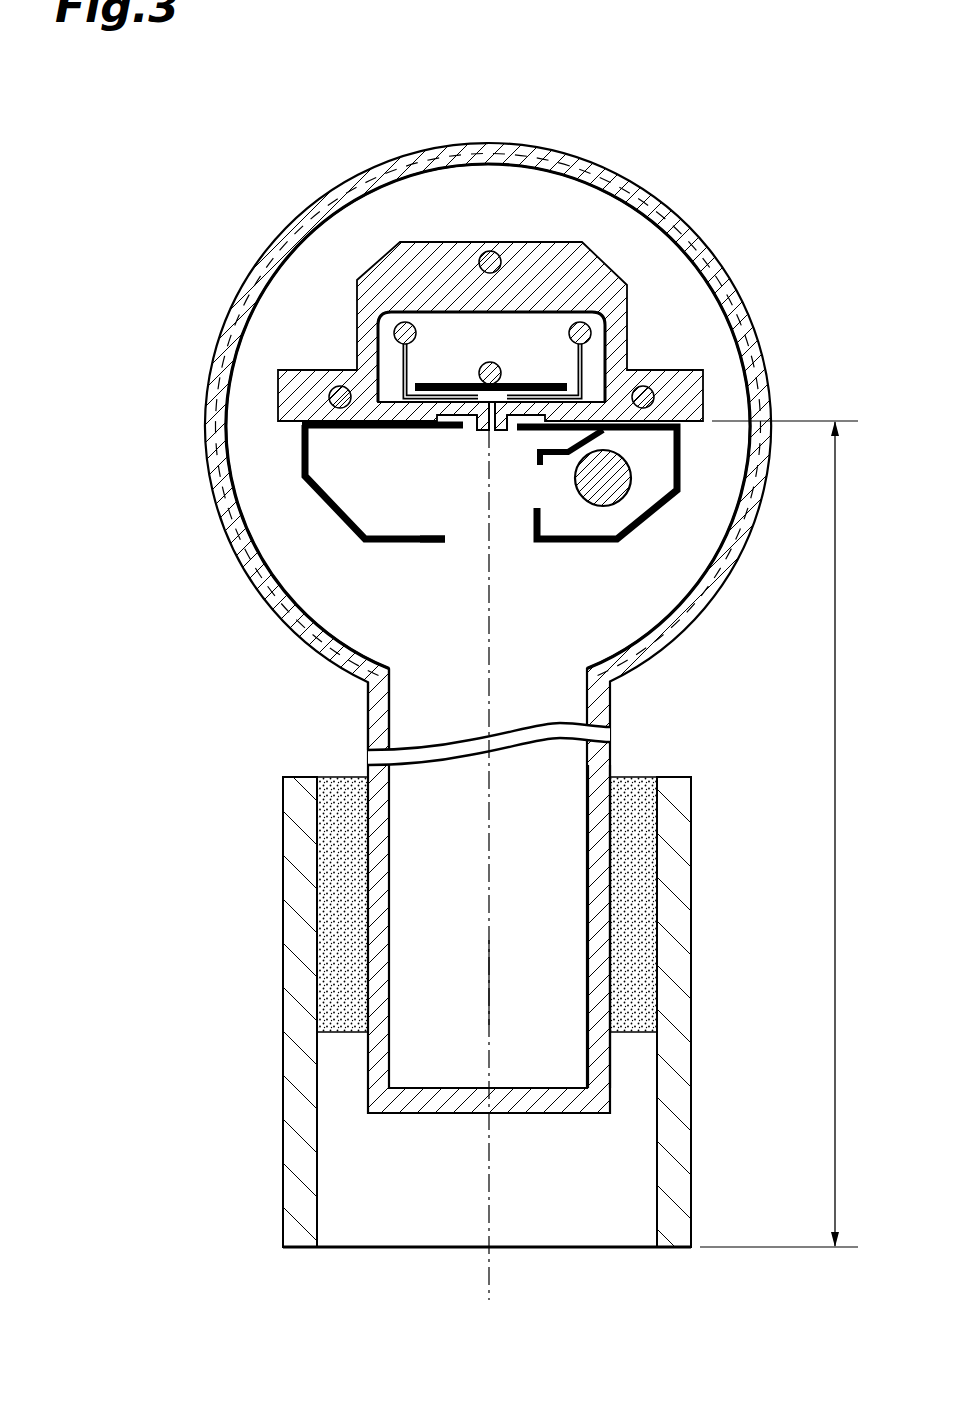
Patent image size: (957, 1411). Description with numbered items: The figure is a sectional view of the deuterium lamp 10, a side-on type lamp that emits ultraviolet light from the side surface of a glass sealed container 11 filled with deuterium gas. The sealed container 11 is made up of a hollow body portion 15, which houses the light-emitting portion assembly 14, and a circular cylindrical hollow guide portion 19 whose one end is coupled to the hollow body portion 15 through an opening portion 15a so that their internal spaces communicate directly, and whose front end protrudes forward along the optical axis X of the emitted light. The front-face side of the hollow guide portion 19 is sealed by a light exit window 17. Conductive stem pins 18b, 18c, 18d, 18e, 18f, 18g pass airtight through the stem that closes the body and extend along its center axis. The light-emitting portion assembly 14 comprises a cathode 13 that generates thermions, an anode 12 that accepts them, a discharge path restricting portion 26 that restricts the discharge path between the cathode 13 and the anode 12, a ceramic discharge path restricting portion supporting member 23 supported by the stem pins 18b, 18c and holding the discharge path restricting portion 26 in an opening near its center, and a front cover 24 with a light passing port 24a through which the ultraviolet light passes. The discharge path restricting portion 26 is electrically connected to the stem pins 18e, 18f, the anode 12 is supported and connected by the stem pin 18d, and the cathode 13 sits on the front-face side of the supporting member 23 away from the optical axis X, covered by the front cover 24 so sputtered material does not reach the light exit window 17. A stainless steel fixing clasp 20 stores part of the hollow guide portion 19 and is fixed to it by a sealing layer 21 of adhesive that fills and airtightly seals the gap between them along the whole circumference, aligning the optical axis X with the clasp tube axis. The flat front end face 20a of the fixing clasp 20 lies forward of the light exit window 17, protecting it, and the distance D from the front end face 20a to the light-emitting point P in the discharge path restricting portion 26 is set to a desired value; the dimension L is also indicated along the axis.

The deuterium lamp 10 is at (278, 126).
The sealed container 11 is at (278, 186).
The hollow body portion 15 is at (262, 262).
The opening portion 15a is at (390, 666).
The light-emitting portion assembly 14 is at (338, 321).
The stem pin 18b is at (338, 400).
The stem pin 18c is at (680, 425).
The stem pin 18d is at (489, 362).
The stem pin 18e is at (403, 323).
The stem pin 18f is at (581, 322).
The stem pin 18g is at (492, 251).
The anode 12 is at (545, 382).
The discharge path restricting portion supporting member 23 is at (688, 370).
The discharge path restricting portion 26 is at (480, 416).
The light-emitting point P is at (492, 430).
The front cover 24 is at (350, 525).
The light passing port 24a is at (445, 545).
The cathode 13 is at (617, 492).
The hollow guide portion 19 is at (608, 768).
The light exit window 17 is at (428, 1105).
The fixing clasp 20 is at (680, 907).
The front end face 20a is at (582, 1250).
The sealing layer 21 is at (643, 840).
The optical axis X is at (490, 940).
The distance L is at (487, 1025).
The distance D is at (835, 975).